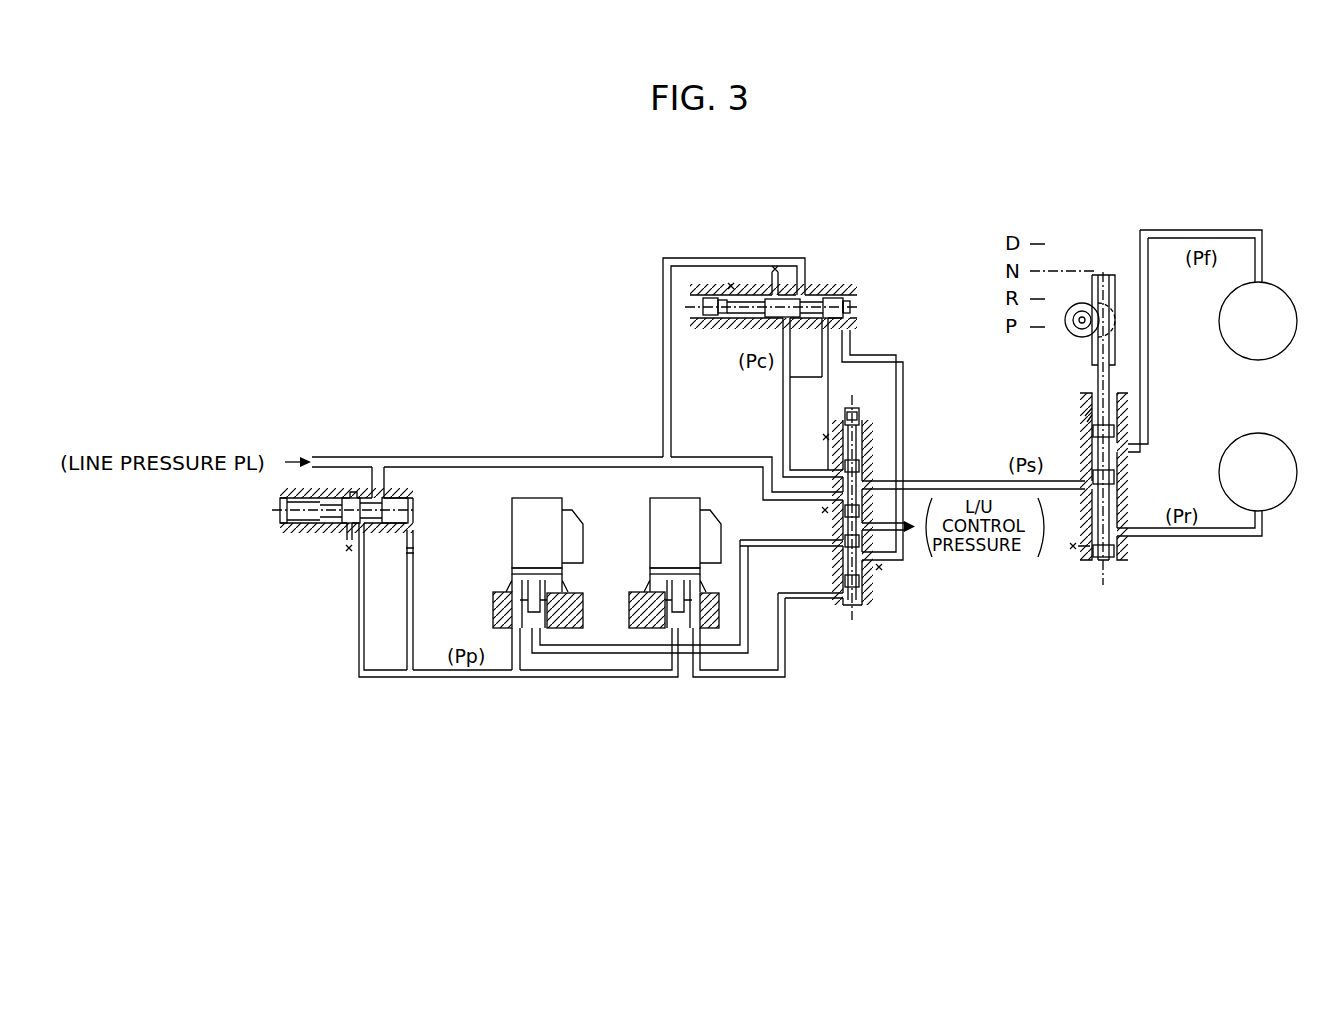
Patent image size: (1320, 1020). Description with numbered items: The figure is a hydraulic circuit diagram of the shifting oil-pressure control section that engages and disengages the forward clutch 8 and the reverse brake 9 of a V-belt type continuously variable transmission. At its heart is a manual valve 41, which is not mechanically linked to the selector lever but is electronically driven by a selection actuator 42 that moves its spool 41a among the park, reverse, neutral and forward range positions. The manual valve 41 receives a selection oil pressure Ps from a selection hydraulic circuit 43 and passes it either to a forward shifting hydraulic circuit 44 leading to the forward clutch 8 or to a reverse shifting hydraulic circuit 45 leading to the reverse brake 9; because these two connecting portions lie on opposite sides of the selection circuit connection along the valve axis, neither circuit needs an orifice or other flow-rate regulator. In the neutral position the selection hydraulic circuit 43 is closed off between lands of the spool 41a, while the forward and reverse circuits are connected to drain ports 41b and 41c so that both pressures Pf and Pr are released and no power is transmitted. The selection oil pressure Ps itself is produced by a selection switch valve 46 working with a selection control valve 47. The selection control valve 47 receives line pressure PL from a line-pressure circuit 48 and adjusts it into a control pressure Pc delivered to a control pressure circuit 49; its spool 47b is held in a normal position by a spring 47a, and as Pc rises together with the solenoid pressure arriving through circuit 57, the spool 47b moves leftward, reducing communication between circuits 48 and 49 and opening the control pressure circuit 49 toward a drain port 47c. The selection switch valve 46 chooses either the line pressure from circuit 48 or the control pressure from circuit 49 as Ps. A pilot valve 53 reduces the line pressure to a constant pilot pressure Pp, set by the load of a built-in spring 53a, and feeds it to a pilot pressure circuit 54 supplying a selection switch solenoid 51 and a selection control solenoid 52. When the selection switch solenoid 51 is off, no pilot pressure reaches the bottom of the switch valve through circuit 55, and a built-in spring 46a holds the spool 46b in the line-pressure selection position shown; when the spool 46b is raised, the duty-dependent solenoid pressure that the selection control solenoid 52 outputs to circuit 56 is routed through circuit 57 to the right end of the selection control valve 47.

The forward clutch 8 is at (1281, 292).
The reverse brake 9 is at (1281, 444).
The manual valve 41 is at (1076, 447).
The spool 41a is at (1116, 481).
The drain port 41b is at (1086, 400).
The drain port 41c is at (1083, 550).
The selection actuator 42 is at (1075, 338).
The selection hydraulic circuit 43 is at (935, 480).
The forward shifting hydraulic circuit 44 is at (1189, 231).
The reverse shifting hydraulic circuit 45 is at (1187, 538).
The selection switch valve 46 is at (831, 514).
The spring 46a is at (840, 434).
The spool 46b is at (846, 463).
The selection control valve 47 is at (820, 282).
The spring 47a is at (720, 322).
The spool 47b is at (851, 306).
The drain port 47c is at (771, 284).
The line-pressure circuit 48 is at (672, 456).
The control pressure circuit 49 is at (783, 398).
The selection switch solenoid 51 is at (648, 512).
The selection control solenoid 52 is at (510, 512).
The pilot valve 53 is at (325, 537).
The spring 53a is at (290, 535).
The pilot pressure circuit 54 is at (433, 668).
The circuit 55 is at (786, 674).
The circuit 56 is at (740, 538).
The circuit 57 is at (888, 356).